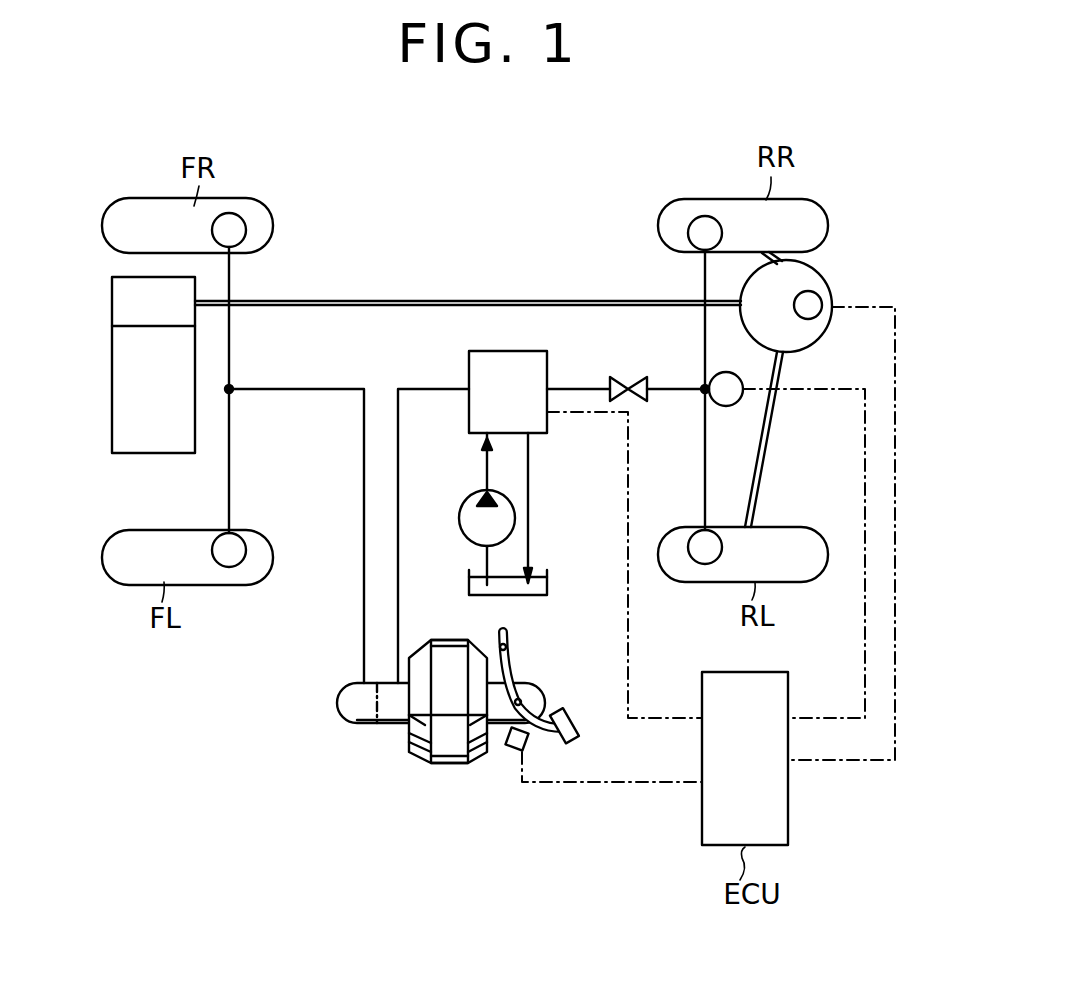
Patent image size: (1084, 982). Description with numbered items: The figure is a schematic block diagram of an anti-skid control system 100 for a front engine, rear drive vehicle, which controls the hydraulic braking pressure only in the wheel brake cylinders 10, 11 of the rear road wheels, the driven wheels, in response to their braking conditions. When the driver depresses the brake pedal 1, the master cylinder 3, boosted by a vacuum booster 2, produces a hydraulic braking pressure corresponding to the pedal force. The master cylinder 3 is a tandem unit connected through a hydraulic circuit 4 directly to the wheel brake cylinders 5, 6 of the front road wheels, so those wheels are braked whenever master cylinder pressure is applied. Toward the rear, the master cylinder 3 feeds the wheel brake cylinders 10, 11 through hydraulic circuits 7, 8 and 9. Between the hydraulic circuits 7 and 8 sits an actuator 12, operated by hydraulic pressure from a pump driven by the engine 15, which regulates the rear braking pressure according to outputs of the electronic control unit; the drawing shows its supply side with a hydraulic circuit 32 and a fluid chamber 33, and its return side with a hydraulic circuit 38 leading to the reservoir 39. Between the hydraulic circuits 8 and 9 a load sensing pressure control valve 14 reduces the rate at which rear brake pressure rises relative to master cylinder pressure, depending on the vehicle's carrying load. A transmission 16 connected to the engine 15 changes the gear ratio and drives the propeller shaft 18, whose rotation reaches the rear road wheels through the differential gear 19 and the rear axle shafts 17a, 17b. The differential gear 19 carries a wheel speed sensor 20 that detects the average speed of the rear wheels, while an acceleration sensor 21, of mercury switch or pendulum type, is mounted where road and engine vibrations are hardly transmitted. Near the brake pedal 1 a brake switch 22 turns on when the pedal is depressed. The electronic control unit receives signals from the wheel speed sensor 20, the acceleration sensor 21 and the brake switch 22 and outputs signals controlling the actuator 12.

The anti-lock brake control system 100 is at (509, 256).
The brake pedal 1 is at (573, 718).
The vacuum booster 2 is at (445, 766).
The master cylinder 3 is at (357, 726).
The hydraulic circuit 4 is at (289, 388).
The wheel brake cylinder 5 is at (234, 222).
The wheel brake cylinder 6 is at (237, 566).
The hydraulic circuit 7 is at (432, 388).
The hydraulic circuit 8 is at (580, 388).
The hydraulic circuit 9 is at (676, 393).
The wheel brake cylinder 10 is at (700, 218).
The wheel brake cylinder 11 is at (697, 564).
The actuator 12 is at (508, 352).
The load sensing pressure control valve 14 is at (642, 377).
The engine 15 is at (159, 456).
The transmission 16 is at (124, 282).
The rear drive shaft 17a is at (800, 258).
The rear drive shaft 17b is at (769, 449).
The propeller shaft 18 is at (404, 299).
The differential gear 19 is at (832, 292).
The wheel speed sensor 20 is at (818, 318).
The acceleration sensor 21 is at (727, 408).
The brake switch 22 is at (511, 754).
The hydraulic circuit 32 is at (483, 466).
The fluid chamber 33 is at (465, 526).
The hydraulic circuit 38 is at (530, 506).
The reservoir 39 is at (466, 596).